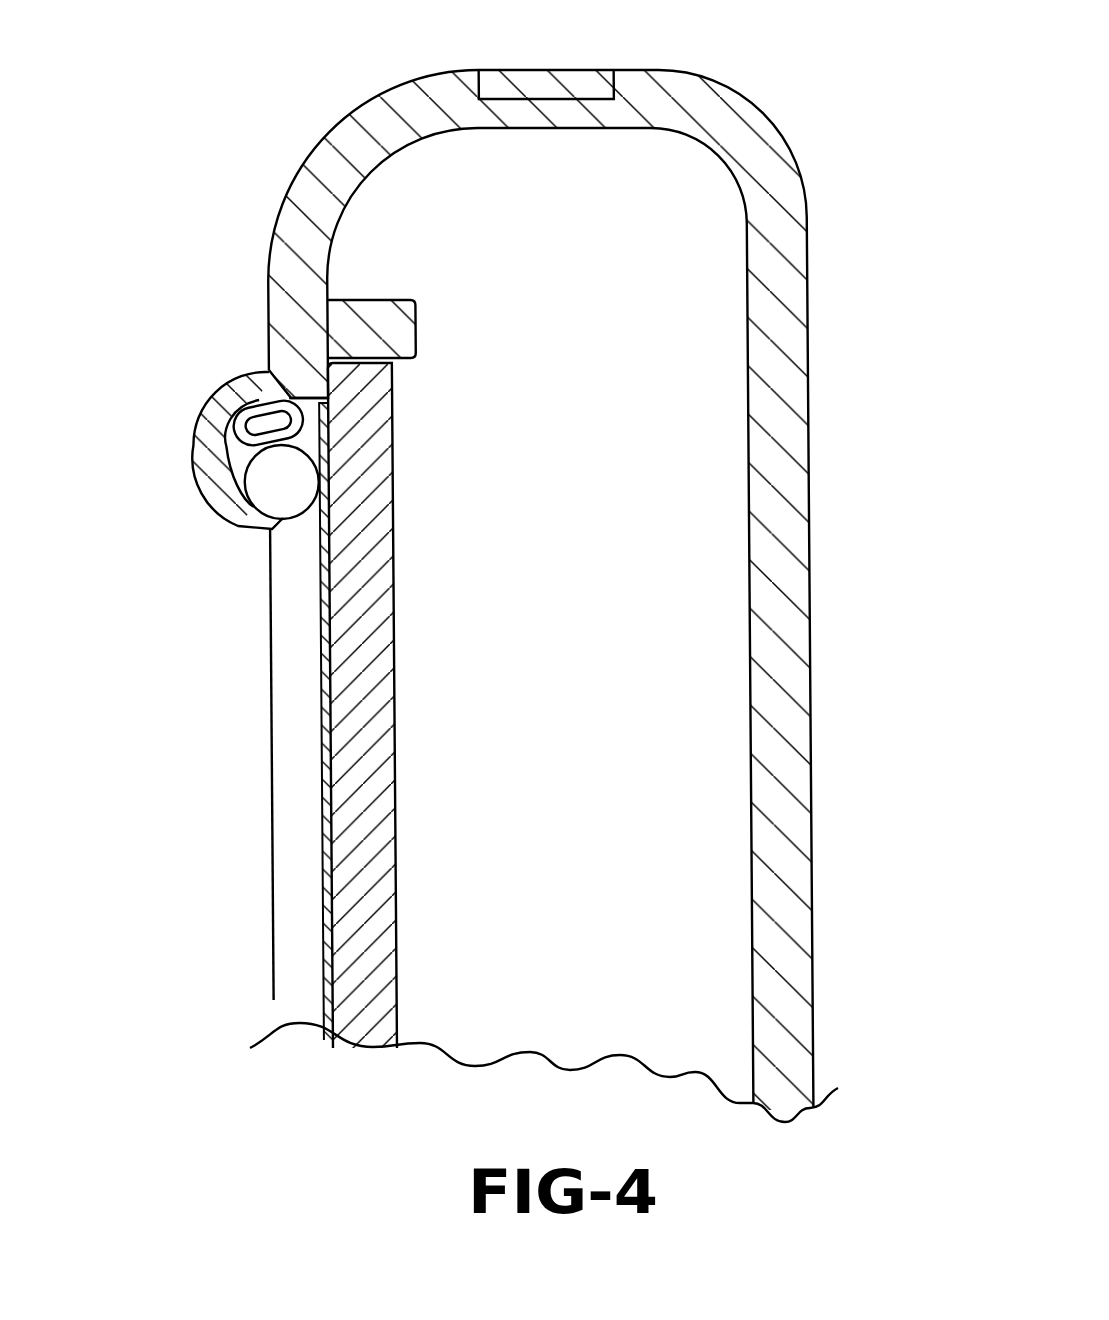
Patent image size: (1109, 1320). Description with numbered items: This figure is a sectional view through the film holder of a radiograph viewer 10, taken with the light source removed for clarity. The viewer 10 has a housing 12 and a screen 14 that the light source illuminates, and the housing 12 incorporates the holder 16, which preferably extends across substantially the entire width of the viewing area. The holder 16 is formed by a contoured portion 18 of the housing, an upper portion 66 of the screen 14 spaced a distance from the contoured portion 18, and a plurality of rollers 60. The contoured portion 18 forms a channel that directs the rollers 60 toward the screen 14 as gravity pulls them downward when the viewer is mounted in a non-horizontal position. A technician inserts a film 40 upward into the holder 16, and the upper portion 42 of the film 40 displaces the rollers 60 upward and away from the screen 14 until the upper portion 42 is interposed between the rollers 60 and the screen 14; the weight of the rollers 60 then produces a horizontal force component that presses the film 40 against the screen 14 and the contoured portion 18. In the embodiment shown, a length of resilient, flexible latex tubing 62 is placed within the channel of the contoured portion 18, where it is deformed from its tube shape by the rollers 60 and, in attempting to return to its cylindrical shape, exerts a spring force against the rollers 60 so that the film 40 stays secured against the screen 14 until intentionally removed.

The viewer 10 is at (867, 170).
The housing 12 is at (772, 698).
The screen 14 is at (362, 820).
The holder 16 is at (152, 350).
The contoured portion 18 is at (200, 423).
The film 40 is at (320, 680).
The upper portion of film 42 is at (317, 433).
The rollers 60 is at (275, 492).
The tubing 62 is at (255, 413).
The upper portion of screen 66 is at (394, 428).